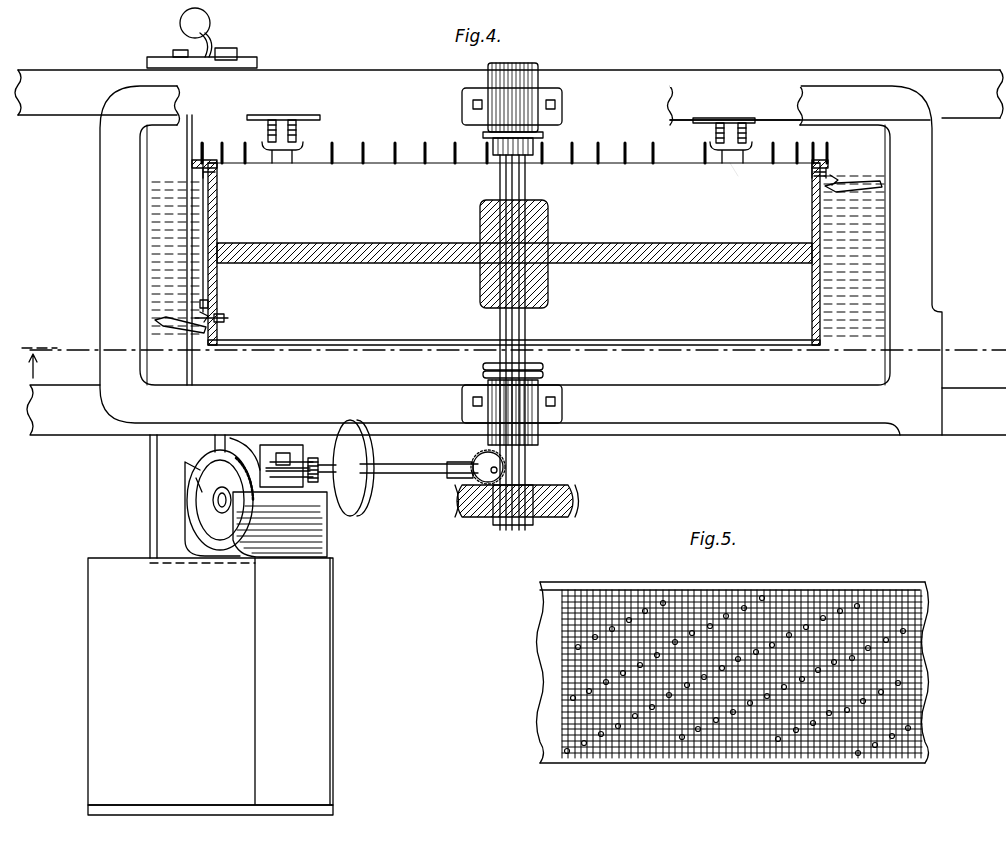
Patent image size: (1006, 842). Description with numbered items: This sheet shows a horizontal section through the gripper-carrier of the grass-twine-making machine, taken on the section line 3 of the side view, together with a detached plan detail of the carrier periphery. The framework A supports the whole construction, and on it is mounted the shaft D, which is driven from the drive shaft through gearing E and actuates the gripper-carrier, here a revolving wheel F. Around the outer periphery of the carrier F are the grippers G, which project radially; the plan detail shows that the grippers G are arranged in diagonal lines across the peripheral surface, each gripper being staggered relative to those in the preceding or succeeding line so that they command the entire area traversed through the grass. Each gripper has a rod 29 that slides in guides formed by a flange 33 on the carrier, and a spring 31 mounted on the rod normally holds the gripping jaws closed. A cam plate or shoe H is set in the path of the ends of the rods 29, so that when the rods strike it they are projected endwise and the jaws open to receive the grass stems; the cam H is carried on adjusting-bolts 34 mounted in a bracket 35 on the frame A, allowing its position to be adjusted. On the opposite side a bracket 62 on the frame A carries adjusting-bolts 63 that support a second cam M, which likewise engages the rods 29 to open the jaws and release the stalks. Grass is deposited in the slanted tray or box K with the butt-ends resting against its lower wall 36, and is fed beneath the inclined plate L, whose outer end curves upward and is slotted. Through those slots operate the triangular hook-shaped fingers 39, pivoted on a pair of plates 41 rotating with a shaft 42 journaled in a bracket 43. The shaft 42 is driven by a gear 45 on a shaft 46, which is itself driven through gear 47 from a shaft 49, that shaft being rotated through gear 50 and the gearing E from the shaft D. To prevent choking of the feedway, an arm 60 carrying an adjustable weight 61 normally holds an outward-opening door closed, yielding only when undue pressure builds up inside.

In FIG. 4, the framework A is at (510, 252).
In FIG. 4, the shaft D is at (527, 333).
In FIG. 4, the gearing E is at (576, 505).
In FIG. 4, the revolving wheel F is at (812, 290).
In FIG. 5, the revolving wheel F is at (853, 586).
In FIG. 4, the grippers G is at (173, 326).
In FIG. 5, the grippers G is at (743, 606).
In FIG. 4, the cam plate or shoe H is at (314, 140).
In FIG. 4, the tray or box K is at (158, 447).
In FIG. 4, the plate L is at (327, 532).
In FIG. 4, the cam M is at (730, 163).
In FIG. 4, the section line 3 is at (31, 357).
In FIG. 4, the rod 29 is at (200, 150).
In FIG. 4, the spring 31 is at (216, 318).
In FIG. 4, the flange 33 is at (195, 165).
In FIG. 4, the adjusting-bolts 34 is at (288, 120).
In FIG. 4, the bracket 35 is at (258, 116).
In FIG. 4, the lower wall 36 is at (330, 636).
In FIG. 4, the fingers 39 is at (180, 518).
In FIG. 4, the plates 41 is at (220, 500).
In FIG. 4, the shaft 42 is at (220, 500).
In FIG. 4, the bracket 43 is at (254, 440).
In FIG. 4, the gear 45 is at (318, 481).
In FIG. 4, the shaft 46 is at (313, 442).
In FIG. 4, the gear 47 is at (369, 502).
In FIG. 4, the shaft 49 is at (406, 463).
In FIG. 4, the gear 50 is at (477, 456).
In FIG. 4, the arm 60 is at (214, 44).
In FIG. 4, the weight 61 is at (182, 21).
In FIG. 4, the bracket 62 is at (712, 118).
In FIG. 4, the adjusting-bolts 63 is at (716, 134).